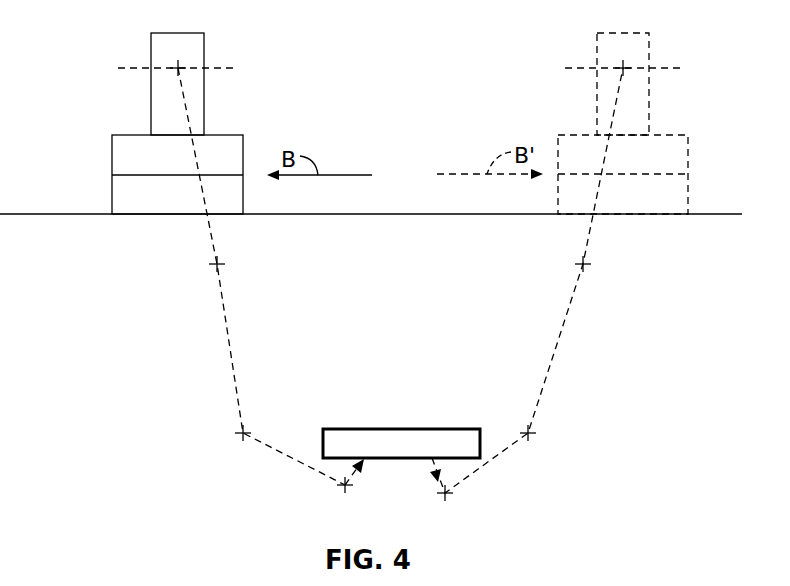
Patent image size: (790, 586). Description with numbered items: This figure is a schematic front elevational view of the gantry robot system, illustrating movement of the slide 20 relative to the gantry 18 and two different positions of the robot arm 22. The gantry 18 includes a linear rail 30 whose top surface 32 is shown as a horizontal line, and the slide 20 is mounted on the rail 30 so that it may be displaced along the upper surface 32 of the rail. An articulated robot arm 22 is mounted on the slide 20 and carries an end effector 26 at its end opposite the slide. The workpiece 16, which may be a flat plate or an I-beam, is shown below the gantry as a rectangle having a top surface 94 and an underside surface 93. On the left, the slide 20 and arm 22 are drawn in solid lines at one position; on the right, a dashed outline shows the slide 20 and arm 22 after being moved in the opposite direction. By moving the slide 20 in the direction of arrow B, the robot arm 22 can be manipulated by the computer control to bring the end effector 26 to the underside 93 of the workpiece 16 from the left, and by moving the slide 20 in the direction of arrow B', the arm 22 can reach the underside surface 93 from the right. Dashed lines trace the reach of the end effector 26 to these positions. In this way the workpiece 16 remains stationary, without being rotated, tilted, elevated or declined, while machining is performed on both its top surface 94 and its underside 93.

The workpiece 16 is at (360, 440).
The gantry 18 is at (706, 211).
The slide 20 is at (173, 206).
The articulated robot arm 22 is at (212, 51).
The end effector 26 is at (362, 486).
The linear rail 30 is at (717, 216).
The top surface of the rail 32 is at (67, 213).
The underside surface of the workpiece 93 is at (396, 464).
The top surface of the workpiece 94 is at (432, 430).